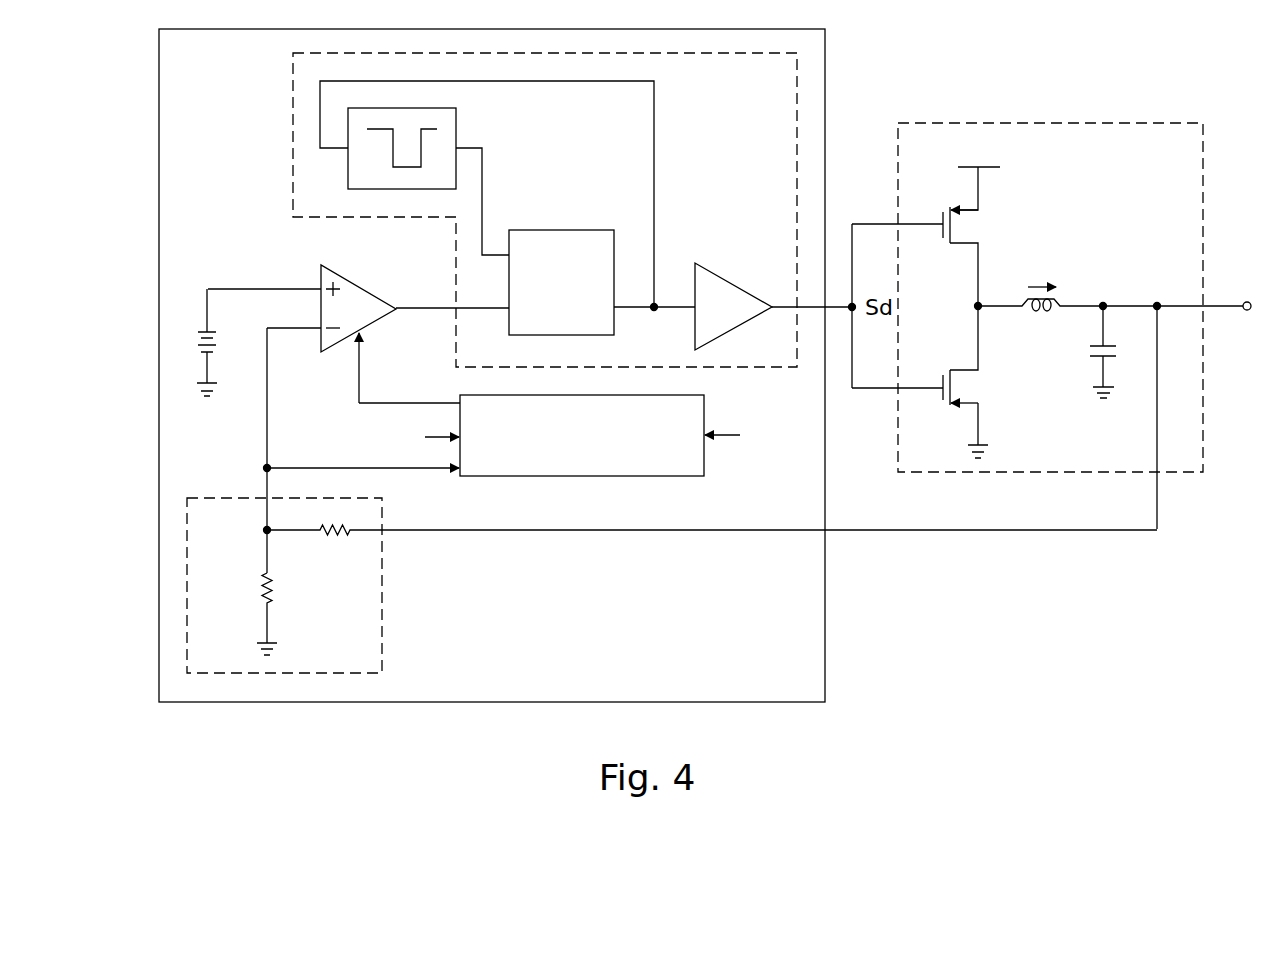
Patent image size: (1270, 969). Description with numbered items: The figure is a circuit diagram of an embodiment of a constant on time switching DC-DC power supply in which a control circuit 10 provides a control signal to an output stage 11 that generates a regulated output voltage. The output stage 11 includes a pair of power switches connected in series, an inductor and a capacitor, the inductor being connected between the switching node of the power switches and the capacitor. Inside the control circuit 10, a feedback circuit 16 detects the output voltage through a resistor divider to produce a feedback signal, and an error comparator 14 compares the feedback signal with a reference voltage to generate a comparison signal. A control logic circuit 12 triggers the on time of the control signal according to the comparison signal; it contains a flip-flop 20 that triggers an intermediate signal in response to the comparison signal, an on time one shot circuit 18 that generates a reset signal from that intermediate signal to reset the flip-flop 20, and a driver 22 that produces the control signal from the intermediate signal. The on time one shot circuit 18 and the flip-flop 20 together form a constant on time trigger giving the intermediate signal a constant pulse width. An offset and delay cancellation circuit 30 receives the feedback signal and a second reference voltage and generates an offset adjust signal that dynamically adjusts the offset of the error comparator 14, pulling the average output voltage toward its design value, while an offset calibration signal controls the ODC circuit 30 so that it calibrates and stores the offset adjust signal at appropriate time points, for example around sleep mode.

The control circuit 10 is at (825, 601).
The output stage 11 is at (1049, 123).
The control logic circuit 12 is at (293, 133).
The error comparator 14 is at (352, 284).
The feedback circuit 16 is at (382, 600).
The on time one shot circuit 18 is at (456, 122).
The flip-flop 20 is at (552, 230).
The driver 22 is at (736, 290).
The offset and delay cancellation (ODC) circuit 30 is at (704, 458).